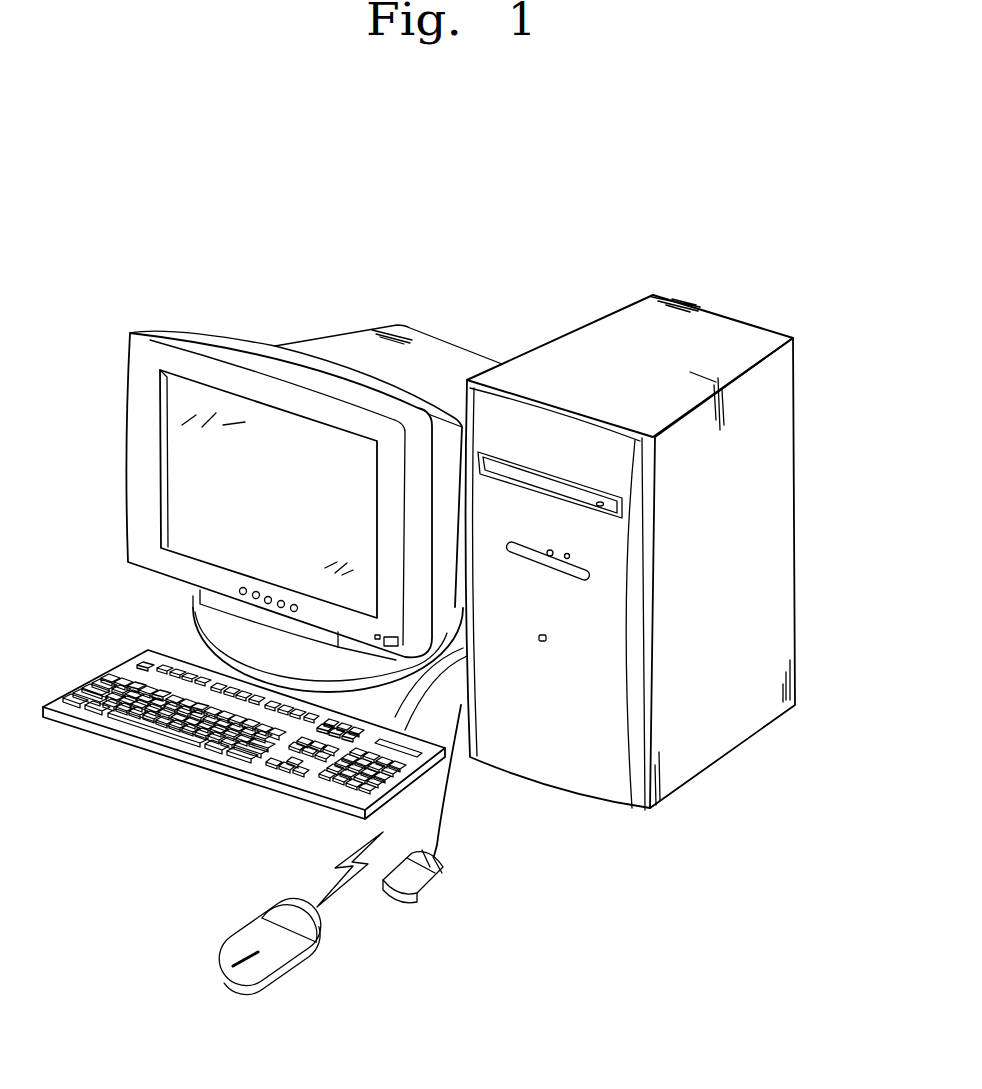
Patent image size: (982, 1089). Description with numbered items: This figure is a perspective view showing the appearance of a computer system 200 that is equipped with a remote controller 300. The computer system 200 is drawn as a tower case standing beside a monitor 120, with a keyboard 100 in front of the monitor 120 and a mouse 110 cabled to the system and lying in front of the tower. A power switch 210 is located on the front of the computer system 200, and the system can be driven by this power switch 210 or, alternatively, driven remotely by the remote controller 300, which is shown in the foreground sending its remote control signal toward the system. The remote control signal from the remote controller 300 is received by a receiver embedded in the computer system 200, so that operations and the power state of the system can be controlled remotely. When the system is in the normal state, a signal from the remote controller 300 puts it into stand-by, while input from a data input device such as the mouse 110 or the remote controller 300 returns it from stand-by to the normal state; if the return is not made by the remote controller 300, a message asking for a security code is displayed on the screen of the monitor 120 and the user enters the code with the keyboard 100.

The keyboard 100 is at (243, 762).
The mouse 110 is at (430, 883).
The monitor 120 is at (187, 335).
The computer system 200 is at (712, 323).
The power switch 210 is at (549, 640).
The remote controller 300 is at (296, 990).